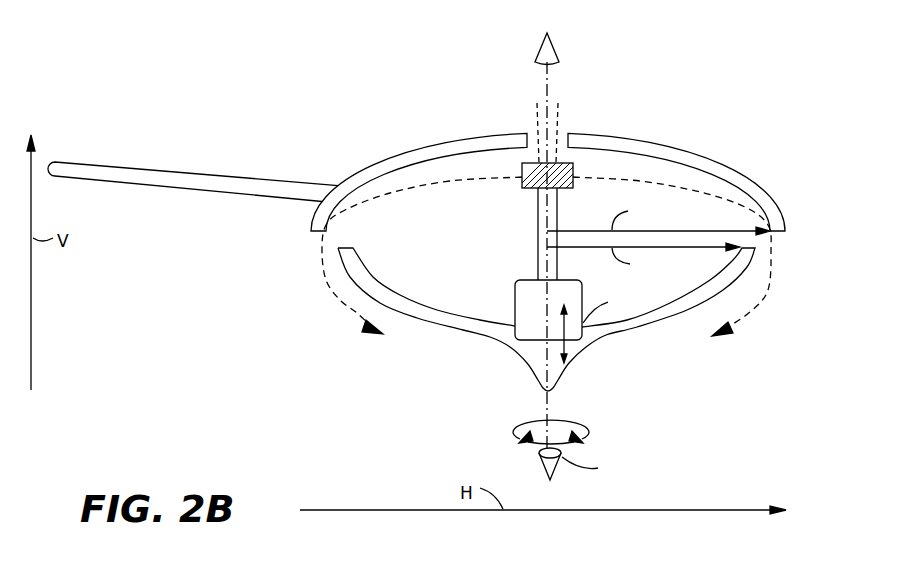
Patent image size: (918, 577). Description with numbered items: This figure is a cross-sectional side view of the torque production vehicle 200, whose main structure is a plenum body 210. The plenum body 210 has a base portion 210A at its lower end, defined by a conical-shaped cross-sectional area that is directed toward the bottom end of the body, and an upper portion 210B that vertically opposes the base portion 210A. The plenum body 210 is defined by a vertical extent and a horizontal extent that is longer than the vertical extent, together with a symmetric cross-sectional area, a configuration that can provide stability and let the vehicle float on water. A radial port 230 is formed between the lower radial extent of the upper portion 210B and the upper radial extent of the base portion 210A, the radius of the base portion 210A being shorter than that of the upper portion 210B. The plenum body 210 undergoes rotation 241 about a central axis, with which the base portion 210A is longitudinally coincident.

The vehicle 200 is at (390, 84).
The plenum body 210 is at (650, 150).
The base portion 210A is at (638, 333).
The upper portion 210B is at (718, 167).
The radial port 230 is at (320, 232).
The rotation 241 is at (513, 427).